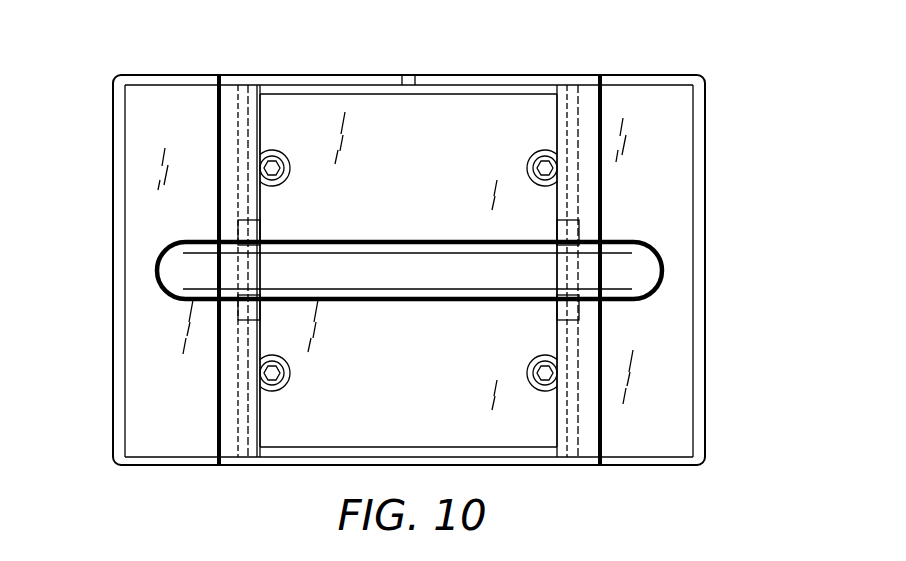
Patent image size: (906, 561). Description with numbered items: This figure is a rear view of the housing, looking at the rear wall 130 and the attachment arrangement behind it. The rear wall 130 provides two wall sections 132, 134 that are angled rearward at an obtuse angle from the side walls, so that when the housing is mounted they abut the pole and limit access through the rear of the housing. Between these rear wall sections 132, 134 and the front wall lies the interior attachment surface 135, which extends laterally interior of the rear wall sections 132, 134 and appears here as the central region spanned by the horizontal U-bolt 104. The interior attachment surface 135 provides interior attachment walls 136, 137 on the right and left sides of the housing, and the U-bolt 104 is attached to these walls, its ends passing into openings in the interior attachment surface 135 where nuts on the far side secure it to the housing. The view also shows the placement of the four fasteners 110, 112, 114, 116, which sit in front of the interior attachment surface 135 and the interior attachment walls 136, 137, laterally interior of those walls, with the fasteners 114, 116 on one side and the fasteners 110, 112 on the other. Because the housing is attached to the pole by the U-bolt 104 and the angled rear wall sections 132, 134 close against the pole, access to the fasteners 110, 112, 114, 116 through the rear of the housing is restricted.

The U-bolt 104 is at (230, 267).
The fastener 110 is at (548, 148).
The fastener 112 is at (552, 382).
The fastener 114 is at (265, 148).
The fastener 116 is at (262, 382).
The rear wall 130 is at (140, 118).
The rear wall section 132 is at (680, 298).
The rear wall section 134 is at (148, 327).
The interior attachment surface 135 is at (235, 192).
The interior attachment wall 136 is at (230, 167).
The interior attachment wall 137 is at (590, 160).